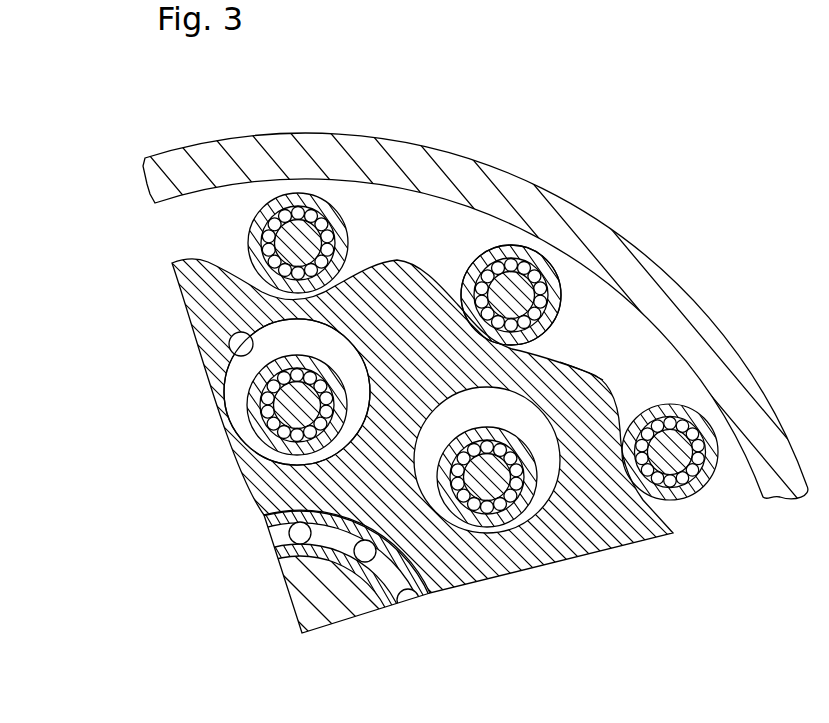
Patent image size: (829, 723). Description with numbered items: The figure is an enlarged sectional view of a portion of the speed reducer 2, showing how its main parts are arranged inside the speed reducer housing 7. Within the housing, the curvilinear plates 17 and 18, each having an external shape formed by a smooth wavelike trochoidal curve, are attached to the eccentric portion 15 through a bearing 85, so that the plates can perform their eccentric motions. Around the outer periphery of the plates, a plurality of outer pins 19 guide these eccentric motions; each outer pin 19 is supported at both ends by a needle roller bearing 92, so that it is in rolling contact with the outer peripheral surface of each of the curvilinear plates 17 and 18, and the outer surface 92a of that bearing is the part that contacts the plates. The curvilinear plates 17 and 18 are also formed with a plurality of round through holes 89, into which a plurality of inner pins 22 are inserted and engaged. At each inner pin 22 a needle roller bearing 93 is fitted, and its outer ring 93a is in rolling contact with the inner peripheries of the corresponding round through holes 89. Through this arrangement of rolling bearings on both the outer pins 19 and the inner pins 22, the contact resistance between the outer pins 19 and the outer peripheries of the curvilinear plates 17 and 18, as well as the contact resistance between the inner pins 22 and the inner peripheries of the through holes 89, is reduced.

The speed reducer 2 is at (234, 128).
The speed reducer housing 7 is at (293, 147).
The outer pin 19 is at (300, 243).
The needle roller bearing 92 is at (530, 277).
The outer ring outer surface 92a is at (550, 277).
The curvilinear plate 17 is at (578, 370).
The curvilinear plate 18 is at (603, 397).
The round through hole 89 is at (215, 354).
The outer ring 93a is at (262, 383).
The needle roller bearing 93 is at (267, 417).
The inner pin 22 is at (287, 418).
The eccentric portion 15 is at (343, 603).
The bearing 85 is at (423, 593).